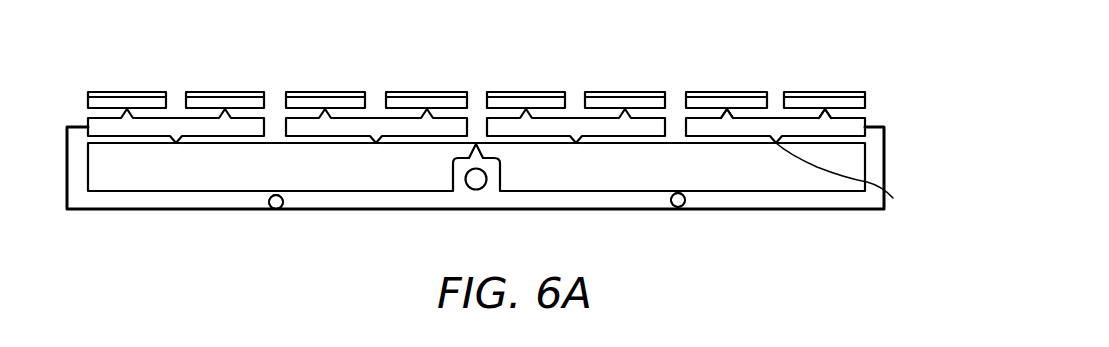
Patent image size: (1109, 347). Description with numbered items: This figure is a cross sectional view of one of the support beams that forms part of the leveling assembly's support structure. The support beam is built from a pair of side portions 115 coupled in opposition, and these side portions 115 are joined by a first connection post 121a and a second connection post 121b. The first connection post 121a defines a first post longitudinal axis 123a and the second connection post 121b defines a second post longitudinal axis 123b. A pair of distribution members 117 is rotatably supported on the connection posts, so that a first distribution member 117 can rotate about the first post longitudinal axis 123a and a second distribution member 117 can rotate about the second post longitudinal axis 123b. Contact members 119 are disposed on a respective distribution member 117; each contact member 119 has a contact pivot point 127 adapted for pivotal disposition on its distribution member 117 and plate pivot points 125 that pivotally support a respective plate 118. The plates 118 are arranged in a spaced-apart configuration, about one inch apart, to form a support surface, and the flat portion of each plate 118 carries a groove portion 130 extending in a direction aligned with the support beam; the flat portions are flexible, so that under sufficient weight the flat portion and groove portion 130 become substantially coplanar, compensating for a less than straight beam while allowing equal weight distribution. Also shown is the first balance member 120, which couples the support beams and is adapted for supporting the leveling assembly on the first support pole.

The side portions 115 is at (877, 158).
The distribution members 117 is at (137, 178).
The plates 118 is at (495, 102).
The contact members 119 is at (180, 118).
The first balance member 120 is at (472, 186).
The first connection post 121a is at (682, 207).
The second connection post 121b is at (279, 208).
The first post longitudinal axis 123a is at (672, 206).
The second post longitudinal axis 123b is at (270, 207).
The plate pivot points 125 is at (722, 108).
The contact pivot point 127 is at (859, 181).
The groove portion 130 is at (497, 98).